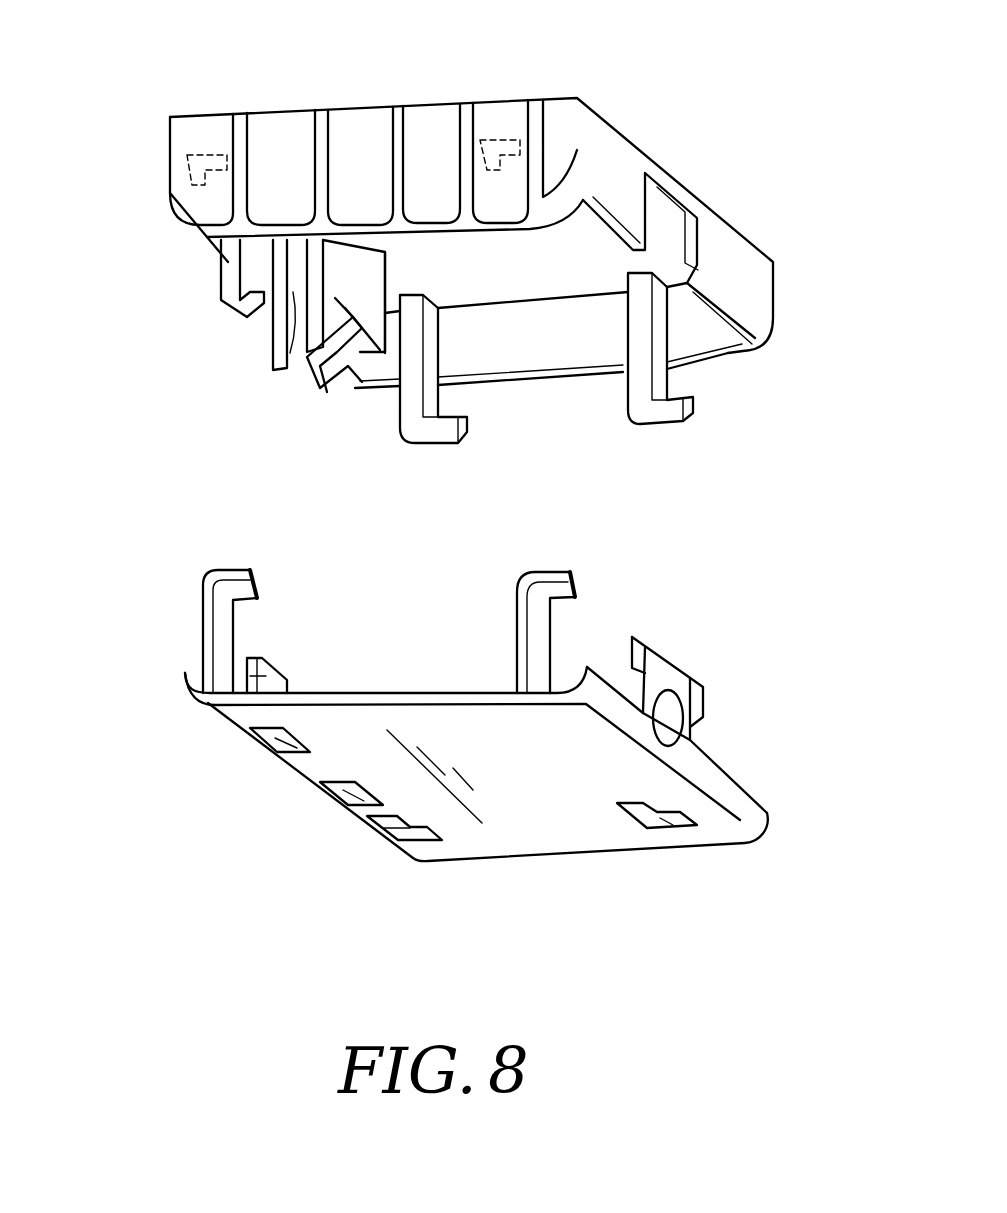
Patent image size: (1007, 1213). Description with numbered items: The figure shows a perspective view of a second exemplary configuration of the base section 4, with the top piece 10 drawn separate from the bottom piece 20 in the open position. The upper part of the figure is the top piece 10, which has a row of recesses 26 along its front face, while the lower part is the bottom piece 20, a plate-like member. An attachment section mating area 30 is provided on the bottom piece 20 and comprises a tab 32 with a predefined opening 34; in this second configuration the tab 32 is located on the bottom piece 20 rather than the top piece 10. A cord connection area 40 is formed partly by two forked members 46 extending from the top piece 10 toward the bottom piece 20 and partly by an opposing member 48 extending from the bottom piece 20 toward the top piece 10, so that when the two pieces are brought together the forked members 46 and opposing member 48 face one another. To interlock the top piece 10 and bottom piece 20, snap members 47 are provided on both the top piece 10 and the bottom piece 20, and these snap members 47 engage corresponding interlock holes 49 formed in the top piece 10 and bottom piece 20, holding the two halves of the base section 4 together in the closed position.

The base section 4 is at (653, 113).
The top piece 10 is at (190, 192).
The bottom piece 20 is at (553, 817).
The recess 26 is at (207, 160).
The attachment section mating area 30 is at (678, 648).
The tab 32 is at (683, 683).
The predefined opening 34 is at (670, 725).
The cord connection area 40 is at (258, 333).
The forked members 46 is at (343, 382).
The snap members 47 is at (258, 258).
The opposing member 48 is at (253, 673).
The interlock holes 49 is at (257, 733).